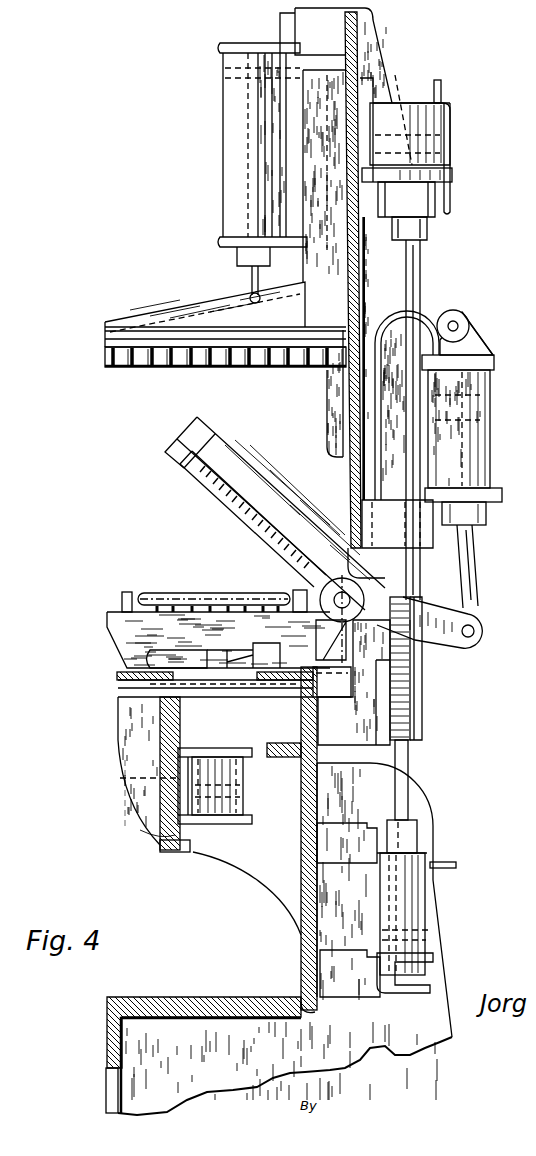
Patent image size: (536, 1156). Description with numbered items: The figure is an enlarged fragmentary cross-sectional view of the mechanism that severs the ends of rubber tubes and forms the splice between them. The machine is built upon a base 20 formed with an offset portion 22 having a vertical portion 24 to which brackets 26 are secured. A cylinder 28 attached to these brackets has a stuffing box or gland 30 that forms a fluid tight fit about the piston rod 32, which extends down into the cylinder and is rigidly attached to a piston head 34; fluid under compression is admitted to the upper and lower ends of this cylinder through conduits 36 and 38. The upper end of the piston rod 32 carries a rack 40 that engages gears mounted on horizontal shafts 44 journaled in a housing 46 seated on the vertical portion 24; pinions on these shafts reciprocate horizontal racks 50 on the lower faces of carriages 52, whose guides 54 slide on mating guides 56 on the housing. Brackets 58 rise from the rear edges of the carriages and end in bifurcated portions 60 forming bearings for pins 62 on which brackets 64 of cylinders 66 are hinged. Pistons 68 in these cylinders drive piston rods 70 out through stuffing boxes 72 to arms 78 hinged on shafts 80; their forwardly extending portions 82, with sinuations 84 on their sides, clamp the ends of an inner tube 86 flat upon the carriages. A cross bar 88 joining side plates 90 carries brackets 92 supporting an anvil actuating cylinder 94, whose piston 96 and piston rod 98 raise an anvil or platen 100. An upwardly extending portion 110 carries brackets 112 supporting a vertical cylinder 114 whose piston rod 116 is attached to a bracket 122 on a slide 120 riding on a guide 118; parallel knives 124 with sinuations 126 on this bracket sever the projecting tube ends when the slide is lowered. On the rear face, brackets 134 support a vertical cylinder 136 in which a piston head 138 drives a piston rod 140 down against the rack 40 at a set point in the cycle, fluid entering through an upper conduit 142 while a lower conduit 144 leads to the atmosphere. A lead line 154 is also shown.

The base 20 is at (128, 1112).
The offset portion 22 is at (188, 1003).
The vertical portion 24 is at (314, 910).
The brackets 26 is at (340, 863).
The cylinder 28 is at (425, 903).
The stuffing box or gland 30 is at (418, 828).
The piston rod 32 is at (410, 790).
The piston head 34 is at (436, 930).
The conduit 36 is at (450, 865).
The conduit 38 is at (430, 980).
The rack 40 is at (412, 740).
The horizontal shafts 44 is at (352, 712).
The housing 46 is at (300, 728).
The horizontal racks 50 is at (150, 660).
The carriages or plates 52 is at (125, 650).
The guides 54 is at (280, 660).
The mating guides 56 is at (165, 655).
The brackets 58 is at (362, 420).
The bifurcated portions 60 is at (451, 312).
The pins 62 is at (458, 322).
The brackets 64 is at (478, 345).
The cylinders 66 is at (490, 382).
The pistons 68 is at (485, 406).
The piston rods 70 is at (478, 542).
The stuffing boxes 72 is at (487, 516).
The arms 78 is at (438, 645).
The shafts 80 is at (336, 596).
The forwardly extending portions 82 is at (270, 490).
The sinuations 84 is at (222, 490).
The inner tube 86 is at (200, 600).
The cross bar 88 is at (170, 820).
The side plates 90 is at (128, 798).
The brackets 92 is at (178, 752).
The anvil actuating cylinder 94 is at (243, 806).
The piston 96 is at (232, 793).
The piston rod 98 is at (135, 798).
The anvil or platen 100 is at (162, 713).
The upwardly extending portion 110 is at (378, 40).
The brackets 112 is at (300, 36).
The vertical cylinder 114 is at (232, 129).
The piston rod 116 is at (252, 275).
The guide 118 is at (345, 393).
The slide 120 is at (372, 312).
The bracket 122 is at (150, 313).
The knives 124 is at (106, 357).
The sinuations 126 is at (163, 368).
The brackets 134 is at (452, 175).
The vertical cylinder 136 is at (447, 160).
The piston head 138 is at (450, 135).
The piston rod 140 is at (421, 267).
The upper conduit 142 is at (442, 88).
The lower conduit 144 is at (451, 210).
The lead line 154 is at (393, 103).